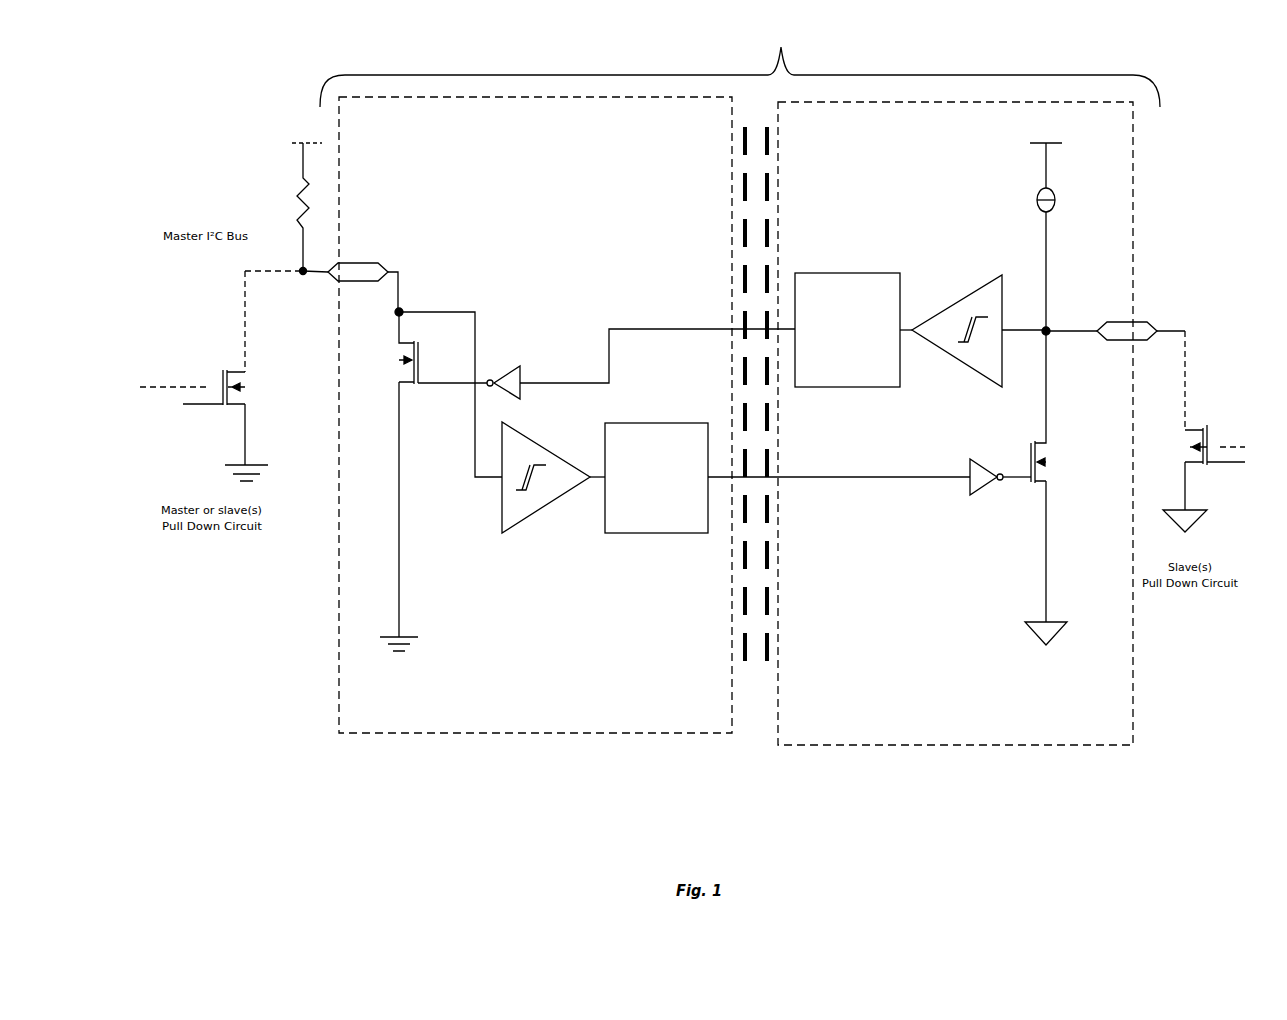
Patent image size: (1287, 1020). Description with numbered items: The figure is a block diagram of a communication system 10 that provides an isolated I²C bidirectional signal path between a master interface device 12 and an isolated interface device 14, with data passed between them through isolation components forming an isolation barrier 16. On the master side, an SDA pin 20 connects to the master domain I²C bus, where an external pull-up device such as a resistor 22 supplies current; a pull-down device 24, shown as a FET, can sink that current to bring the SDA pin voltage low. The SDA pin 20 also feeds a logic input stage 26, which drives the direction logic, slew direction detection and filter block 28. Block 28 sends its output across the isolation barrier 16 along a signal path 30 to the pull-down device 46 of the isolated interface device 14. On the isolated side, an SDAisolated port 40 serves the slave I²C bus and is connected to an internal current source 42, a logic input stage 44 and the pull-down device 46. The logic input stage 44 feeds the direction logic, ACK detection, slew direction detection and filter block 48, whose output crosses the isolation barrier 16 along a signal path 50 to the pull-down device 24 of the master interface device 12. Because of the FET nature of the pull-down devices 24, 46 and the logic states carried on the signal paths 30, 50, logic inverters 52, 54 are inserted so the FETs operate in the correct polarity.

The communication system 10 is at (740, 63).
The master interface device 12 is at (495, 745).
The isolated interface device 14 is at (1000, 750).
The isolation barrier 16 is at (740, 604).
The SDA pin 20 is at (373, 256).
The resistor 22 is at (295, 191).
The pull-down device 24 is at (368, 347).
The logic input stage 26 is at (508, 550).
The direction logic, slew direction detection and filter block 28 is at (633, 550).
The signal path 30 is at (937, 503).
The SDAisolated port 40 is at (1122, 312).
The internal current source 42 is at (1025, 180).
The logic input stage 44 is at (972, 265).
The pull-down device 46 is at (1000, 458).
The direction logic, ACK detection, slew direction detection and filter block 48 is at (855, 268).
The signal path 50 is at (648, 322).
The logic inverter 52 is at (1035, 520).
The logic inverter 54 is at (530, 381).